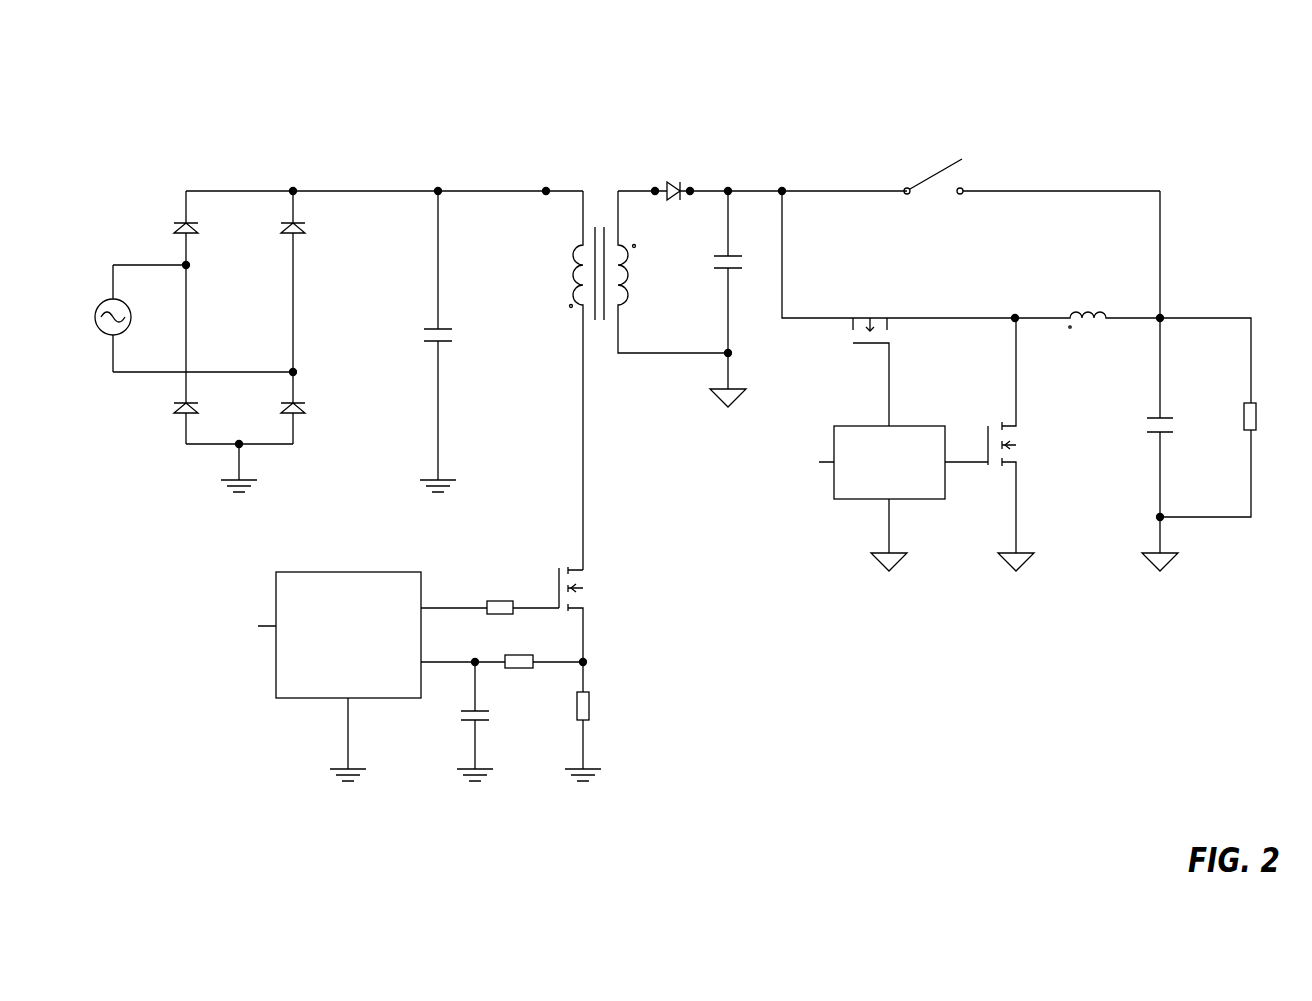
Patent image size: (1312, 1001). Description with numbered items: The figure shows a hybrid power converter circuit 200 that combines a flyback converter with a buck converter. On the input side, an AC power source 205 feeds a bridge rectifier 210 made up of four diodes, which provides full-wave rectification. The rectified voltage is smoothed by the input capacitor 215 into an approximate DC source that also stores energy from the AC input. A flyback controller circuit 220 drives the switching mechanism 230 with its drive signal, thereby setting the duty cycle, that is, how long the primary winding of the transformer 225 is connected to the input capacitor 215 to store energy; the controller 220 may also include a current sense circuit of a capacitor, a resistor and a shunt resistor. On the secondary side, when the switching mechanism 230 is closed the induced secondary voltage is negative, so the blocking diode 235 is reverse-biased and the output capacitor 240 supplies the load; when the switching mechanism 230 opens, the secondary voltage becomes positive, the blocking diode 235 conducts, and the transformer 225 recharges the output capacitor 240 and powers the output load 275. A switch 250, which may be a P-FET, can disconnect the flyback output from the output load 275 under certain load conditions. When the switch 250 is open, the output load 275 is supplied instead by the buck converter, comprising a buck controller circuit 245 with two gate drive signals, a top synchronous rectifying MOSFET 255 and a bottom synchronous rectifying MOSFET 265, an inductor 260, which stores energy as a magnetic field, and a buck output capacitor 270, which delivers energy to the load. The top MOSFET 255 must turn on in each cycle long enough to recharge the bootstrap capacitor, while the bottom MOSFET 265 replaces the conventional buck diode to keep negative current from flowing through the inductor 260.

The hybrid power converter circuit 200 is at (190, 66).
The AC power source 205 is at (141, 276).
The bridge rectifier 210 is at (254, 309).
The capacitor C1 215 is at (427, 312).
The flyback controller circuit 220 is at (322, 546).
The transformer 225 is at (601, 212).
The switching mechanism Q1 230 is at (567, 552).
The blocking diode D2 235 is at (674, 166).
The output capacitor C3 240 is at (723, 274).
The buck controller circuit 245 is at (871, 416).
The switch S 250 is at (933, 150).
The MOSFET Q2 255 is at (880, 293).
The inductor L1 260 is at (1071, 290).
The MOSFET Q3 265 is at (1025, 474).
The capacitor C4 270 is at (1148, 403).
The output load 275 is at (1267, 378).